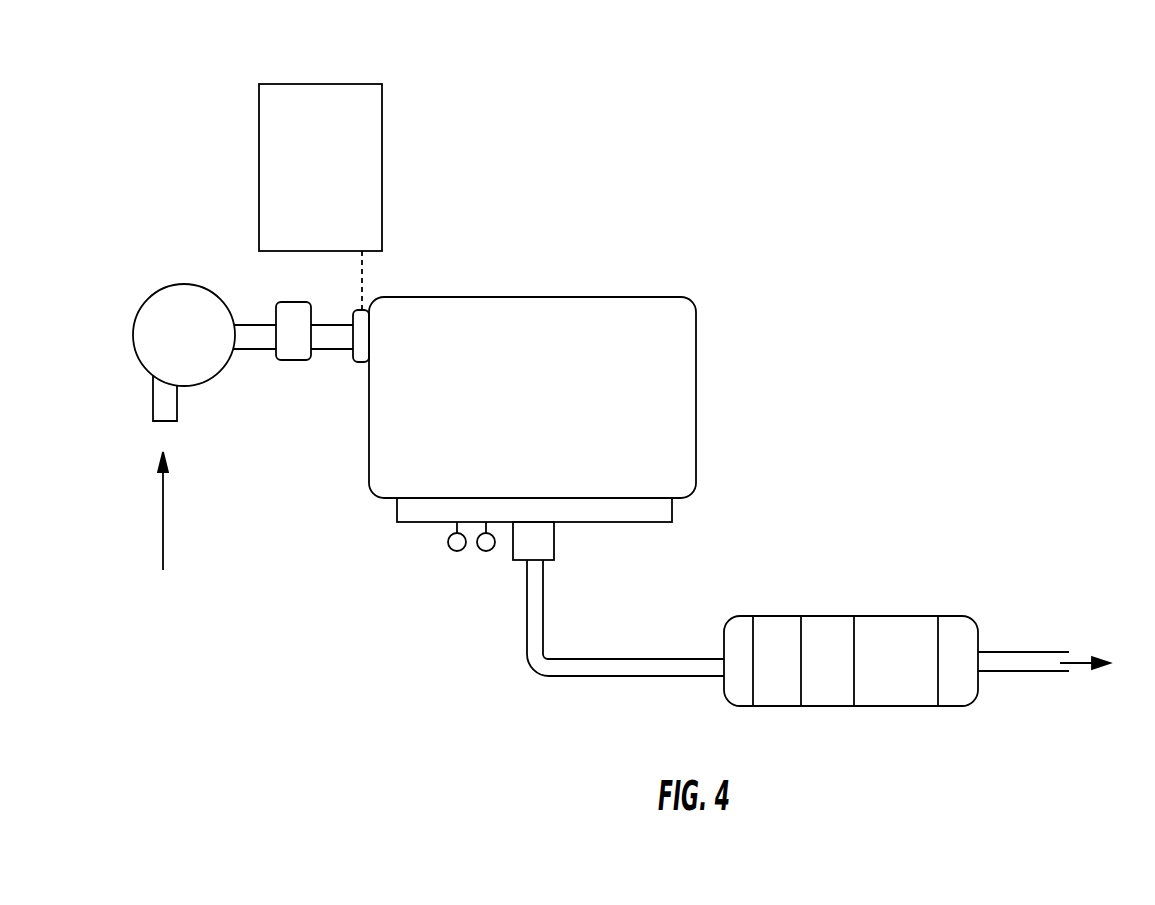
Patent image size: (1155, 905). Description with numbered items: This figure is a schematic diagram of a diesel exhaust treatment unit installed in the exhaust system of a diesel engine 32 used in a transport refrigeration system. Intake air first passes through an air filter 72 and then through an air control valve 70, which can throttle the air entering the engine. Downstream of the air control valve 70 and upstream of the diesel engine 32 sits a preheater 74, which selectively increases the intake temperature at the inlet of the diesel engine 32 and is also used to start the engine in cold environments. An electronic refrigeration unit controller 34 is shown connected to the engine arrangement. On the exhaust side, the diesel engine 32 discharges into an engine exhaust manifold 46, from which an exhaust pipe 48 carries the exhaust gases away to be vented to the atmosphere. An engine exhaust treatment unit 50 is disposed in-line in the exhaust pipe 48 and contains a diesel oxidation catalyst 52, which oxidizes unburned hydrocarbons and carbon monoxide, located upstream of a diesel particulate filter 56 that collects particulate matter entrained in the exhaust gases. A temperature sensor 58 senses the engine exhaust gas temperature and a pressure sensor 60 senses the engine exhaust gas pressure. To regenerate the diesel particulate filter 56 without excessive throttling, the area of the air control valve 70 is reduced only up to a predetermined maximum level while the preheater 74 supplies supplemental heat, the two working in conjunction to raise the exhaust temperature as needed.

The diesel engine 32 is at (550, 297).
The electronic refrigeration unit controller 34 is at (383, 107).
The engine exhaust manifold 46 is at (615, 523).
The exhaust pipe 48 is at (601, 659).
The engine exhaust treatment unit 50 is at (851, 576).
The diesel oxidation catalyst 52 is at (770, 707).
The diesel particulate filter 56 is at (885, 707).
The temperature sensor 58 is at (449, 545).
The pressure sensor 60 is at (487, 552).
The air control valve 70 is at (293, 310).
The air filter 72 is at (188, 305).
The preheater 74 is at (360, 355).